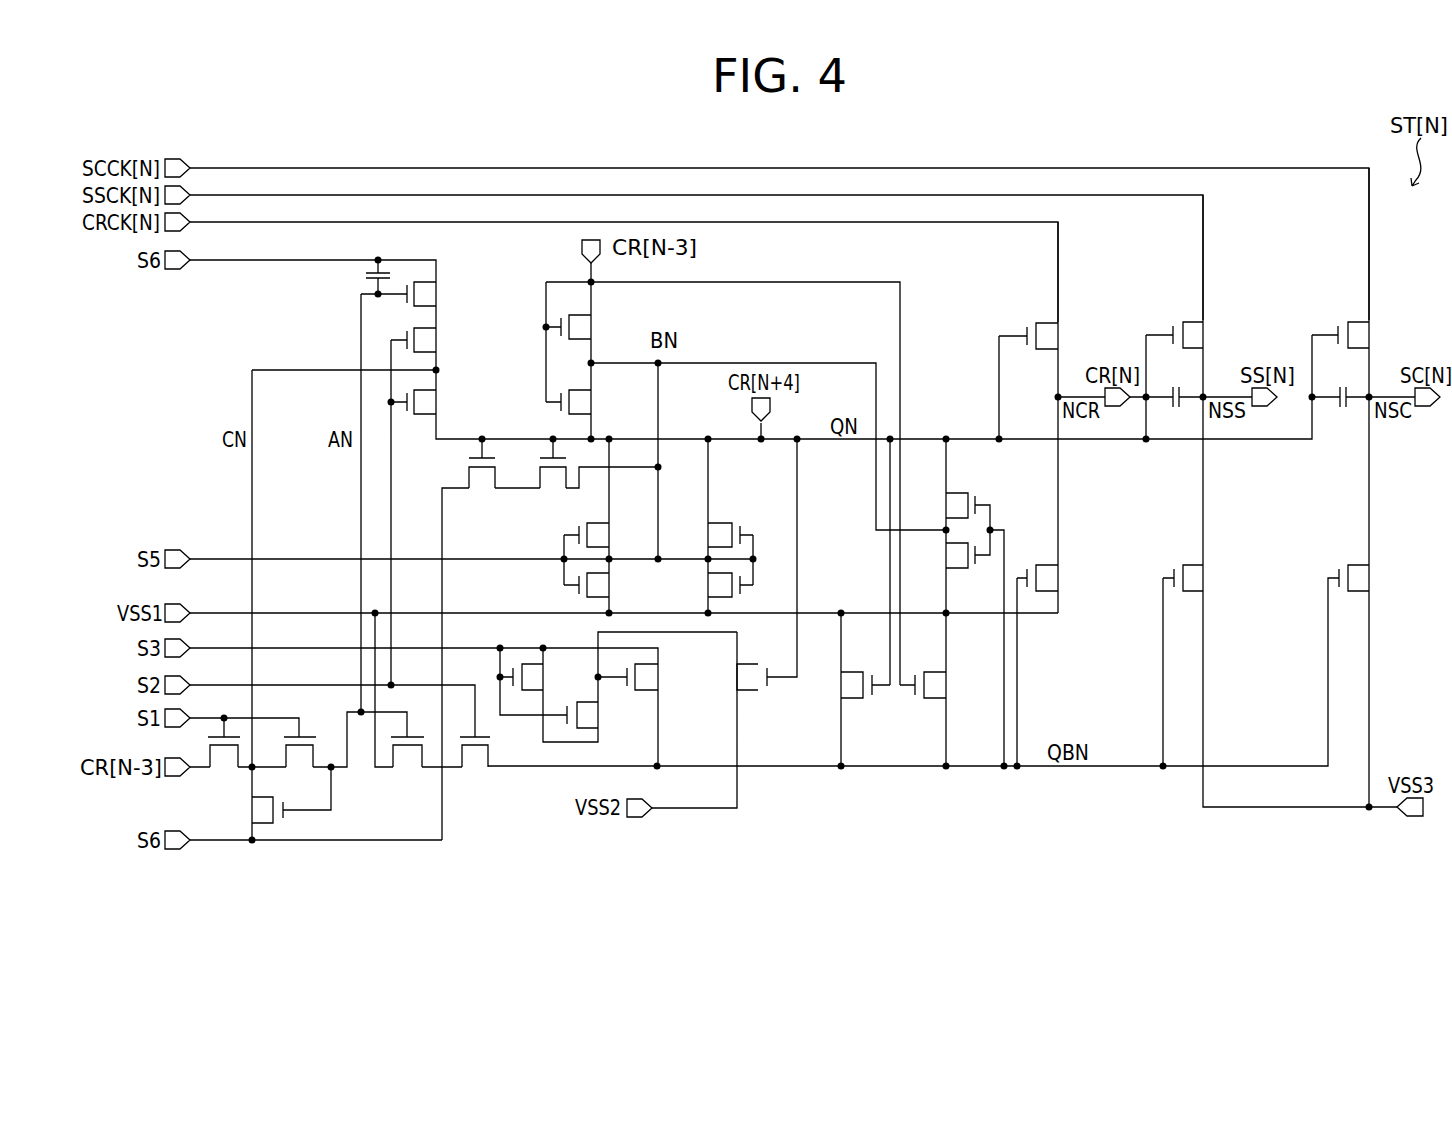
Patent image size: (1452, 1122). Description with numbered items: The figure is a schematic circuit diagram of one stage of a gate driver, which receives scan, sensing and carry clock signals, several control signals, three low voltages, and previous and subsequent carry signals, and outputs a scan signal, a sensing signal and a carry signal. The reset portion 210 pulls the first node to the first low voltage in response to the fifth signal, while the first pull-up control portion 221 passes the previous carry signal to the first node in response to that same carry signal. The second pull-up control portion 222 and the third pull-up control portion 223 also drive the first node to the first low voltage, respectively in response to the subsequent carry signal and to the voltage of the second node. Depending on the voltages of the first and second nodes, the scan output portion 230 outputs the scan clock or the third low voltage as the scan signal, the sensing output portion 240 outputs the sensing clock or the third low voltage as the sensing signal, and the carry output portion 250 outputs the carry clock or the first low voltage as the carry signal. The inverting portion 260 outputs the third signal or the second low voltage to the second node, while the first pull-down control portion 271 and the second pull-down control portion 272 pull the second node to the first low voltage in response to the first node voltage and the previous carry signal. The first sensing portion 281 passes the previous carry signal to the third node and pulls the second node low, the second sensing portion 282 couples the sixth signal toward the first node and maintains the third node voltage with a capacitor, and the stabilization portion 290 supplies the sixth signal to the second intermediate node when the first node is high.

The reset portion 210 is at (485, 702).
The first pull-up control portion 221 is at (475, 609).
The second pull-up control portion 222 is at (532, 724).
The third pull-up control portion 223 is at (650, 720).
The scan output portion 230 is at (990, 602).
The sensing output portion 240 is at (911, 613).
The carry output portion 250 is at (838, 624).
The inverting portion 260 is at (691, 806).
The first pull-down control portion 271 is at (932, 737).
The second pull-down control portion 272 is at (976, 777).
The first sensing portion 281 is at (734, 820).
The second sensing portion 282 is at (797, 595).
The stabilization portion 290 is at (804, 707).